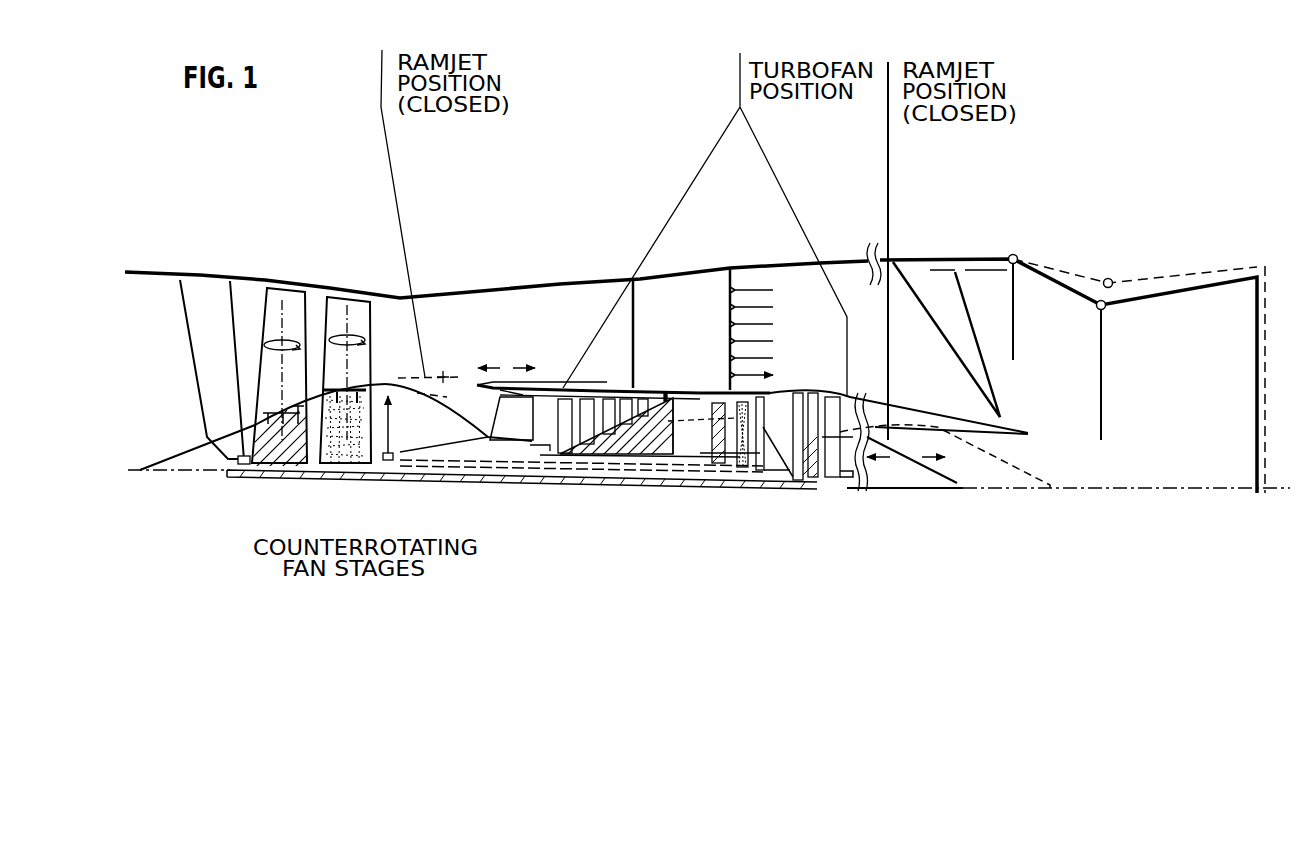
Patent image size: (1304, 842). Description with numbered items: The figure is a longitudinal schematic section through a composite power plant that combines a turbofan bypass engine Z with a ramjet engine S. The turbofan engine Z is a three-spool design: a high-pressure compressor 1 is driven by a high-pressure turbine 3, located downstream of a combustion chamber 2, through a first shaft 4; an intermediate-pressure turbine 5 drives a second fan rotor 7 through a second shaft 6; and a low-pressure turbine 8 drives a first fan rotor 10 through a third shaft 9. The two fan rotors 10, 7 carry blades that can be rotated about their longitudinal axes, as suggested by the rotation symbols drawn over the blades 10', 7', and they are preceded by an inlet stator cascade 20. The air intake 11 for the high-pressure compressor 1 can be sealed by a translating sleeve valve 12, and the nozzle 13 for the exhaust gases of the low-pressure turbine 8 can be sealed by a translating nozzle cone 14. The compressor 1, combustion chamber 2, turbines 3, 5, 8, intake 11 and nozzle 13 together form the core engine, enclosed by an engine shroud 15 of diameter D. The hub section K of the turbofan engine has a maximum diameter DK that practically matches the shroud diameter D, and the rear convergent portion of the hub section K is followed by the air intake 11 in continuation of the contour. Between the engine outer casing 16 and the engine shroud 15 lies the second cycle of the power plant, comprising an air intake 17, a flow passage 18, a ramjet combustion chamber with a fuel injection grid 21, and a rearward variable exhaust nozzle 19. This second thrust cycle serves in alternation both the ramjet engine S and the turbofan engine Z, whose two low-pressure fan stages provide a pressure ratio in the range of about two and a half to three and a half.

The high-pressure compressor 1 is at (625, 458).
The combustion chamber 2 is at (715, 421).
The high-pressure turbine 3 is at (719, 470).
The first shaft 4 is at (668, 457).
The intermediate-pressure turbine 5 is at (748, 484).
The second shaft 6 is at (606, 482).
The second fan rotor 7 is at (327, 459).
The second counterrotating fan stage 7' is at (345, 356).
The low-pressure turbine 8 is at (804, 481).
The third shaft 9 is at (548, 484).
The first fan rotor 10 is at (289, 455).
The first counterrotating fan stage 10' is at (279, 350).
The air intake 11 is at (475, 407).
The translating sleeve valve 12 is at (447, 373).
The nozzle 13 is at (907, 447).
The translating nozzle cone 14 is at (856, 425).
The engine shroud 15 is at (565, 386).
The engine outer casing 16 is at (710, 270).
The air intake 17 is at (150, 383).
The flow passage 18 is at (583, 303).
The variable exhaust nozzle 19 is at (1174, 403).
The inlet stator cascade 20 is at (180, 300).
The fuel injection grid 21 is at (812, 330).
The hub section K is at (196, 452).
The maximum hub diameter DK is at (392, 432).
The ramjet engine S is at (549, 318).
The turbofan bypass engine Z is at (655, 362).
The shroud diameter D is at (672, 403).